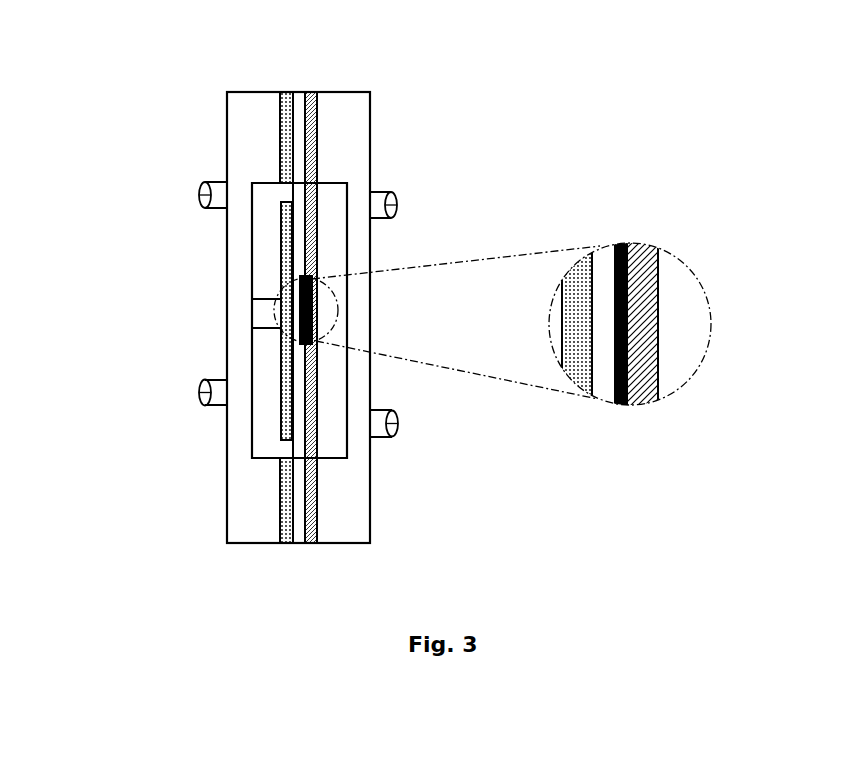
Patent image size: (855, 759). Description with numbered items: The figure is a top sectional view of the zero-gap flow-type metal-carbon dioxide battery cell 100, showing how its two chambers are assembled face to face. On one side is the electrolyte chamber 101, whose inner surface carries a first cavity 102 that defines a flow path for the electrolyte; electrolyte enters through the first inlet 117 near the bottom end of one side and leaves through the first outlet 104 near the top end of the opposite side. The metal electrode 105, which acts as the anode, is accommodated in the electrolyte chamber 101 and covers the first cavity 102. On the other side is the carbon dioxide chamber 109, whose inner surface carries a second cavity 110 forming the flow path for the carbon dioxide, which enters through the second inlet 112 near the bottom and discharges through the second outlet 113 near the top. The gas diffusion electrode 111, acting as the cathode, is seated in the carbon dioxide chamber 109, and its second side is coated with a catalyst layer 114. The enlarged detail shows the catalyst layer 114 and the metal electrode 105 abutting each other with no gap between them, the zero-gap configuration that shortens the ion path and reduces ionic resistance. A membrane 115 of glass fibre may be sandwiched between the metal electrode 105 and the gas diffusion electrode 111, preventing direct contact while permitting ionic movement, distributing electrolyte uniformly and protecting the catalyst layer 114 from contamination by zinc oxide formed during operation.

The zero-gap flow-type metal-carbon dioxide battery cell 100 is at (727, 146).
The electrolyte chamber 101 is at (253, 138).
The first cavity 102 is at (262, 245).
The first outlet 104 is at (199, 194).
The metal electrode 105 is at (282, 490).
The carbon dioxide chamber 109 is at (352, 162).
The second cavity 110 is at (327, 447).
The gas diffusion electrode 111 is at (315, 118).
The second inlet 112 is at (397, 424).
The second outlet 113 is at (396, 210).
The catalyst layer 114 is at (305, 307).
The membrane 115 is at (300, 491).
The first inlet 117 is at (199, 393).